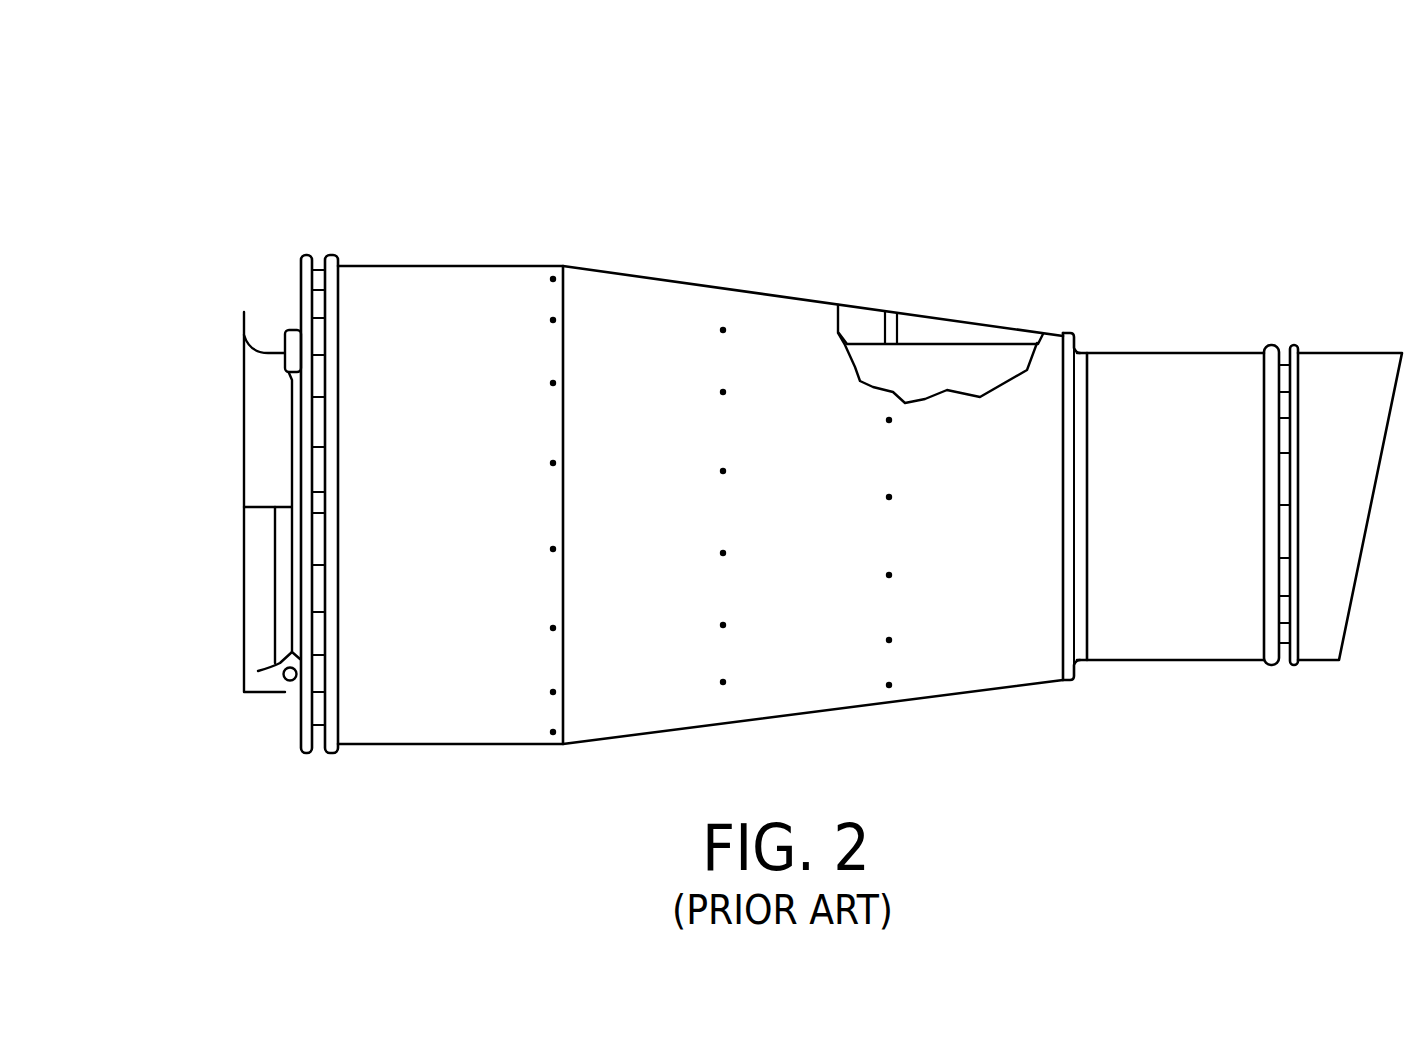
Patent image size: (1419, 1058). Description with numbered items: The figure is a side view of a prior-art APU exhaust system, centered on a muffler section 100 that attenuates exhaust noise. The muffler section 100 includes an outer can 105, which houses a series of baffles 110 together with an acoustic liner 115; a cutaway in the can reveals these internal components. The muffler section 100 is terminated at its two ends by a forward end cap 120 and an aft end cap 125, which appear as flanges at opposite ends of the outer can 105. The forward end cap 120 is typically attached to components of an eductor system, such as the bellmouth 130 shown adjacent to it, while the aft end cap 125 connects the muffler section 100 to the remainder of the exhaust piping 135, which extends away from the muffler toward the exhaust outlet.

The muffler section 100 is at (913, 148).
The outer can 105 is at (628, 270).
The baffles 110 is at (889, 300).
The acoustic liner 115 is at (955, 343).
The forward end cap 120 is at (300, 296).
The aft end cap 125 is at (1078, 666).
The bellmouth 130 is at (243, 365).
The exhaust piping 135 is at (1158, 352).